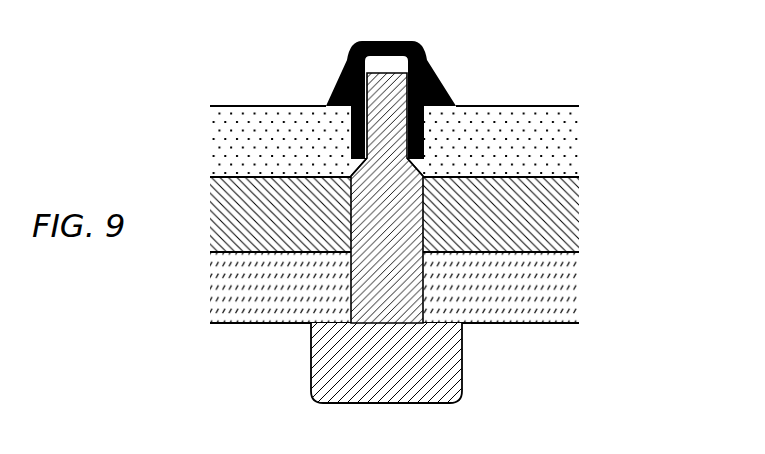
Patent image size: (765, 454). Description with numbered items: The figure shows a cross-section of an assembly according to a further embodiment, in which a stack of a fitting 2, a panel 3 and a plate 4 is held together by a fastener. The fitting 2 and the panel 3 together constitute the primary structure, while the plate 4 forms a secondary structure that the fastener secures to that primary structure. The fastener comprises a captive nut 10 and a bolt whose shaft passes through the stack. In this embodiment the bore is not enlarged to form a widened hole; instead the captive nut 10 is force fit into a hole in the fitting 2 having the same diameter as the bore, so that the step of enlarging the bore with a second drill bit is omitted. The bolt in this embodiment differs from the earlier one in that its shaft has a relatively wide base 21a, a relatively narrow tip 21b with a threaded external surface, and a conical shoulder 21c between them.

The fitting 2 is at (250, 142).
The panel 3 is at (250, 212).
The plate 4 is at (250, 287).
The captive nut 10 is at (331, 63).
The base 21a is at (352, 265).
The tip 21b is at (382, 143).
The conical shoulder 21c is at (420, 167).